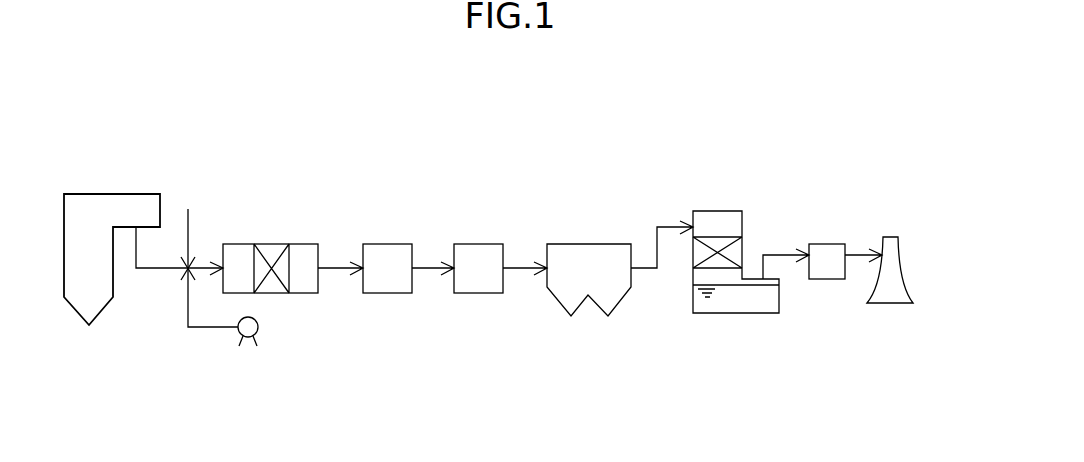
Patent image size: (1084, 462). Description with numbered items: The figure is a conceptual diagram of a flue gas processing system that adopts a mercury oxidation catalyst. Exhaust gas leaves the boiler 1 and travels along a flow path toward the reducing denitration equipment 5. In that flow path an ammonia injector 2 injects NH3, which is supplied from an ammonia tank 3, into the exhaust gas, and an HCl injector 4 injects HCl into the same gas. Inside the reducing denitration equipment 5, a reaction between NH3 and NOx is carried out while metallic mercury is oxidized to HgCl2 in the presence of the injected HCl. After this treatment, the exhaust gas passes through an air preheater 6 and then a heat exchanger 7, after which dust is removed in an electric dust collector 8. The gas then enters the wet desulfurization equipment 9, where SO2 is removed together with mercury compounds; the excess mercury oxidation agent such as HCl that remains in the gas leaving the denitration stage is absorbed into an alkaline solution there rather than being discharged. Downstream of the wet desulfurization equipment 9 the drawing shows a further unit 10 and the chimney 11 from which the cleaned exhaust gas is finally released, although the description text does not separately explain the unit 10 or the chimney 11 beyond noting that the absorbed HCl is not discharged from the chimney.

The boiler 1 is at (125, 193).
The ammonia injector 2 is at (185, 273).
The ammonia tank 3 is at (258, 329).
The HCl injector 4 is at (190, 267).
The reducing denitration equipment 5 is at (275, 243).
The air preheater 6 is at (386, 243).
The heat exchanger 7 is at (474, 243).
The electric dust collector 8 is at (587, 243).
The wet desulfurization equipment 9 is at (717, 210).
The reheater 10 is at (829, 244).
The stack 11 is at (893, 236).